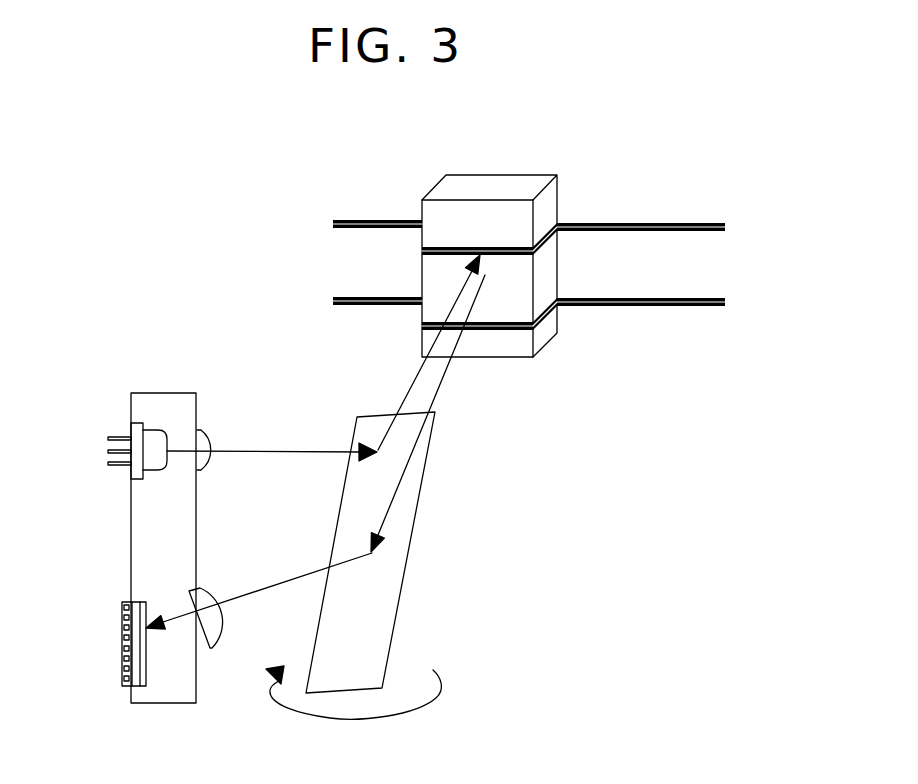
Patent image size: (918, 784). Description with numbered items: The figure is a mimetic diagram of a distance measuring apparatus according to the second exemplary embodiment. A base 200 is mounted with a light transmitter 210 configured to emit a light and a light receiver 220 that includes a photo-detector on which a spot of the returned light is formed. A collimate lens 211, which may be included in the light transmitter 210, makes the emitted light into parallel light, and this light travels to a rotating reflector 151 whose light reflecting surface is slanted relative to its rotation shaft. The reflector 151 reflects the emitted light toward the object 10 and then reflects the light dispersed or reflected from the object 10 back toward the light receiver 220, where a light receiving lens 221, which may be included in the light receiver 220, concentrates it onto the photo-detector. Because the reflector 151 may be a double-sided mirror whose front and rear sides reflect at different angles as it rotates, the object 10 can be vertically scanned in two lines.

The object 10 is at (507, 180).
The reflector 151 is at (390, 578).
The base 200 is at (163, 402).
The light transmitter 210 is at (155, 459).
The collimate lens 211 is at (203, 440).
The light receiver 220 is at (140, 646).
The light receiving lens 221 is at (203, 598).